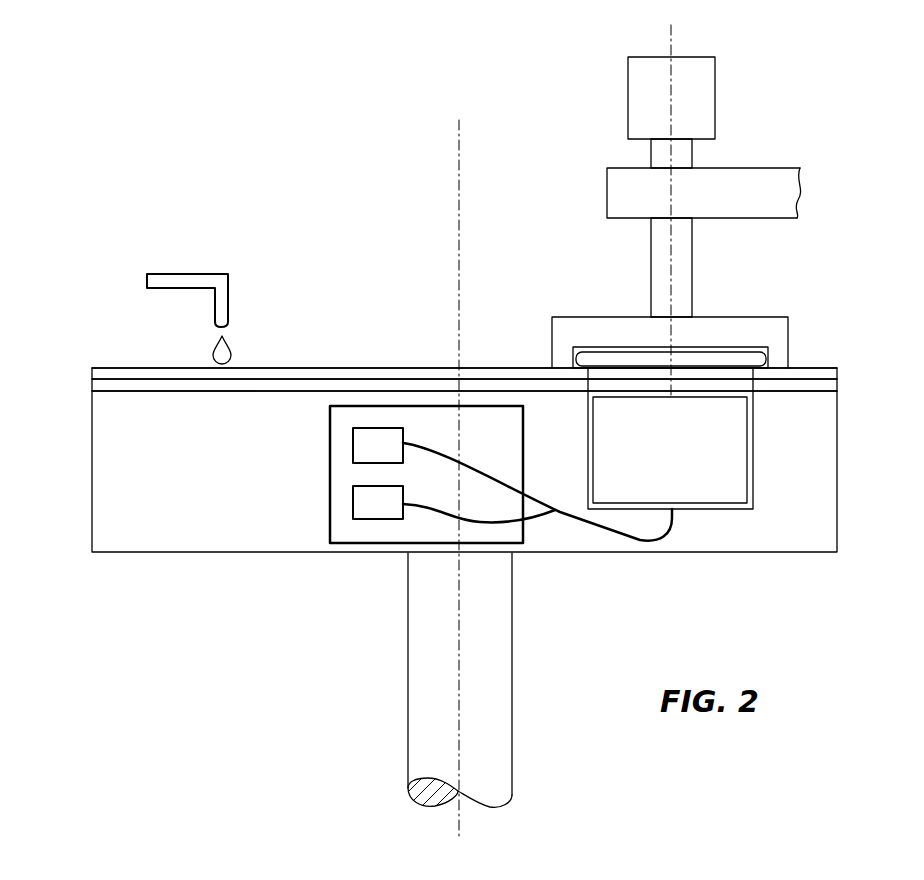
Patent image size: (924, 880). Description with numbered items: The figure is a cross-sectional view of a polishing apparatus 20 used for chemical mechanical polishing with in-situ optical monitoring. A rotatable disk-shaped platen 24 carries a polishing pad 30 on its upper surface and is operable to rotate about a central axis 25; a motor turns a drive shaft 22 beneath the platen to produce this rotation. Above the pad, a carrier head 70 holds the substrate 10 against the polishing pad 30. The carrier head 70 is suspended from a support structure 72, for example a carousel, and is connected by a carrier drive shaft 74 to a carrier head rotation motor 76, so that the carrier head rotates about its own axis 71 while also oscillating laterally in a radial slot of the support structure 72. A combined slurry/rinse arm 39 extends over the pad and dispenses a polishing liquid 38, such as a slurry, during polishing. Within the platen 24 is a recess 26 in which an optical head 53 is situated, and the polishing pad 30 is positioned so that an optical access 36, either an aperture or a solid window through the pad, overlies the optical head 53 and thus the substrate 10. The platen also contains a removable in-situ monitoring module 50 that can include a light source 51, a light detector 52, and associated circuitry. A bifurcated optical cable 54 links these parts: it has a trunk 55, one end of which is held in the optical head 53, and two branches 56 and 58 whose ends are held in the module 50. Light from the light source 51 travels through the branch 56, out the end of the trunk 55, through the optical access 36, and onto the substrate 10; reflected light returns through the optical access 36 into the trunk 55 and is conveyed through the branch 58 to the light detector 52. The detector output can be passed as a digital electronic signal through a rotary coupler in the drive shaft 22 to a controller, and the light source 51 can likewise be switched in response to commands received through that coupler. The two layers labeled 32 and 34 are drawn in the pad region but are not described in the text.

The substrate 10 is at (767, 360).
The polishing apparatus 20 is at (240, 175).
The drive shaft 22 is at (407, 665).
The platen 24 is at (91, 475).
The axis 25 is at (458, 227).
The recess 26 is at (748, 512).
The polishing pad 30 is at (85, 367).
The upper layer 32 is at (838, 373).
The lower layer 34 is at (838, 387).
The optical access 36 is at (695, 374).
The polishing liquid 38 is at (215, 347).
The combined slurry/rinse arm 39 is at (197, 272).
The in-situ monitoring module 50 is at (330, 510).
The light source 51 is at (378, 445).
The light detector 52 is at (378, 502).
The optical head 53 is at (670, 450).
The bifurcated optical cable 54 is at (567, 534).
The trunk 55 is at (617, 546).
The branch 56 is at (479, 457).
The branch 58 is at (429, 527).
The carrier head 70 is at (782, 317).
The axis 71 is at (668, 288).
The support structure 72 is at (607, 197).
The carrier drive shaft 74 is at (692, 157).
The carrier head rotation motor 76 is at (627, 113).